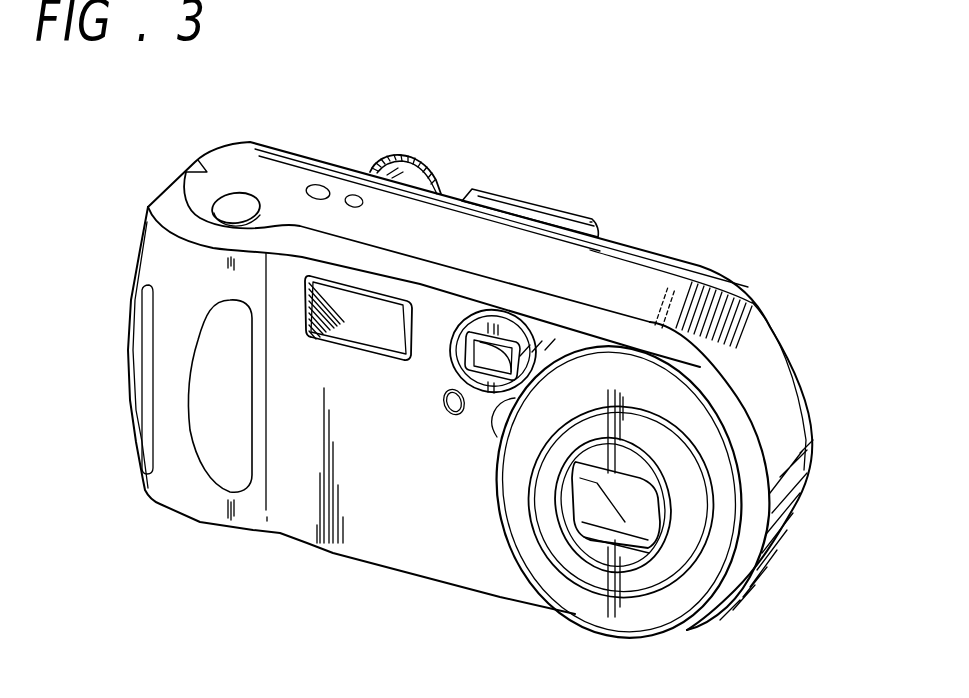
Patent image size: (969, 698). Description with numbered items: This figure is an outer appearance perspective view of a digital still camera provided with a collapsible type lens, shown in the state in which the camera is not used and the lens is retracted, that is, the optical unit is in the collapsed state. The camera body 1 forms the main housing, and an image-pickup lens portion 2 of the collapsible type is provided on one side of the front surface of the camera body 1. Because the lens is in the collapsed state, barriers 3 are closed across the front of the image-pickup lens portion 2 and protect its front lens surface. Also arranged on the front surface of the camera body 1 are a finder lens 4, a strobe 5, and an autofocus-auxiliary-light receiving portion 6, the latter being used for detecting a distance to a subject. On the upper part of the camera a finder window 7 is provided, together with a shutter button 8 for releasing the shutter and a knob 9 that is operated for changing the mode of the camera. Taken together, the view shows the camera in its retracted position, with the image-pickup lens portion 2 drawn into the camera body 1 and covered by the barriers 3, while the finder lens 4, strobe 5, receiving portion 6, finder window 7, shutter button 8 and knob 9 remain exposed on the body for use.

The camera body 1 is at (393, 522).
The image-pickup lens portion 2 is at (727, 465).
The barriers 3 is at (637, 510).
The finder lens 4 is at (520, 343).
The strobe 5 is at (370, 313).
The autofocus-auxiliary-light receiving portion 6 is at (450, 403).
The finder window 7 is at (588, 212).
The shutter button 8 is at (230, 212).
The knob 9 is at (420, 163).